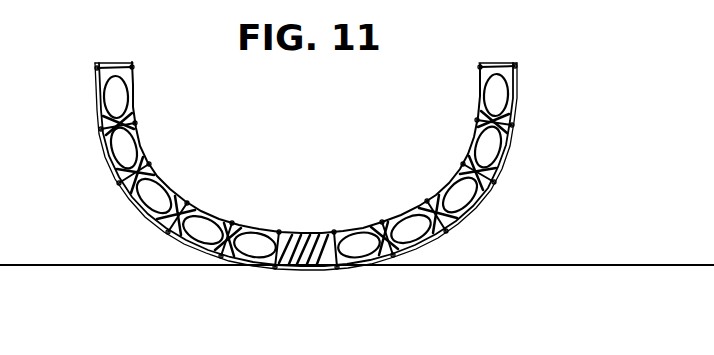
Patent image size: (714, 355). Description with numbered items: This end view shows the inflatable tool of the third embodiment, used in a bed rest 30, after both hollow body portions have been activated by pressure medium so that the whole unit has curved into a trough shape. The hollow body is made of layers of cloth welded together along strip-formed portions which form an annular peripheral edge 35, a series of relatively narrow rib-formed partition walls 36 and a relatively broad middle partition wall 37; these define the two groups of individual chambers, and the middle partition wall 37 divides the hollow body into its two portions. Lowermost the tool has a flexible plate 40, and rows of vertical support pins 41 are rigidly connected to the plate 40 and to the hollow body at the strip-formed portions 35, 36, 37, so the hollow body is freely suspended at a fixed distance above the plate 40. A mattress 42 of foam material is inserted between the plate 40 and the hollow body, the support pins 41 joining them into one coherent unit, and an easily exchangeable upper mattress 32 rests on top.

The bed rest 30 is at (480, 264).
The upper mattress 32 is at (145, 170).
The annular peripheral edge 35 is at (108, 66).
The rib-formed partition walls 36 is at (226, 240).
The middle partition wall 37 is at (322, 232).
The flexible plate 40 is at (120, 184).
The support pins 41 is at (100, 131).
The foam mattress 42 is at (165, 216).